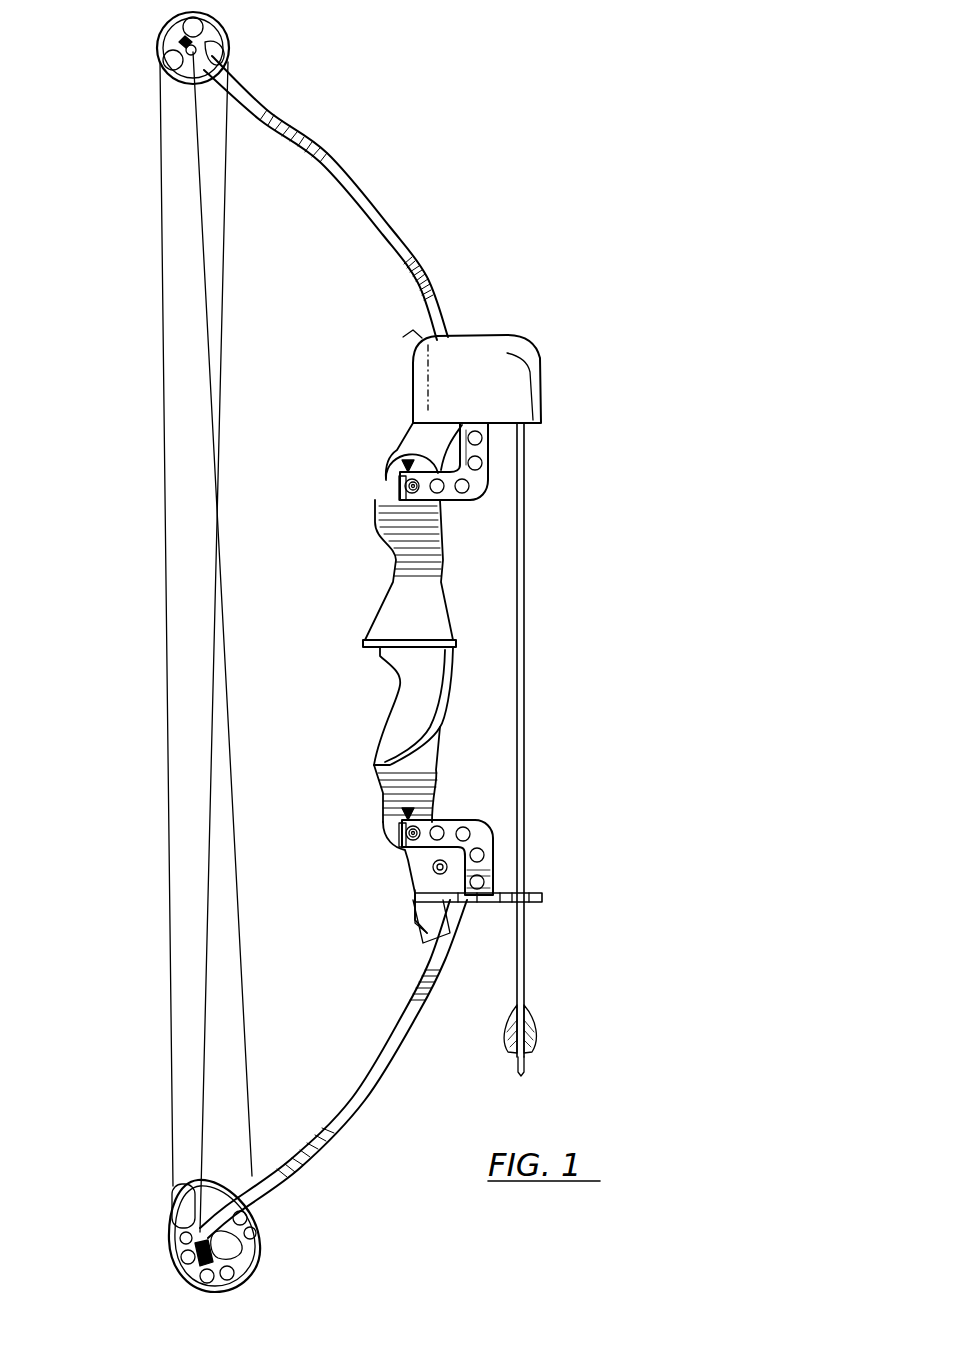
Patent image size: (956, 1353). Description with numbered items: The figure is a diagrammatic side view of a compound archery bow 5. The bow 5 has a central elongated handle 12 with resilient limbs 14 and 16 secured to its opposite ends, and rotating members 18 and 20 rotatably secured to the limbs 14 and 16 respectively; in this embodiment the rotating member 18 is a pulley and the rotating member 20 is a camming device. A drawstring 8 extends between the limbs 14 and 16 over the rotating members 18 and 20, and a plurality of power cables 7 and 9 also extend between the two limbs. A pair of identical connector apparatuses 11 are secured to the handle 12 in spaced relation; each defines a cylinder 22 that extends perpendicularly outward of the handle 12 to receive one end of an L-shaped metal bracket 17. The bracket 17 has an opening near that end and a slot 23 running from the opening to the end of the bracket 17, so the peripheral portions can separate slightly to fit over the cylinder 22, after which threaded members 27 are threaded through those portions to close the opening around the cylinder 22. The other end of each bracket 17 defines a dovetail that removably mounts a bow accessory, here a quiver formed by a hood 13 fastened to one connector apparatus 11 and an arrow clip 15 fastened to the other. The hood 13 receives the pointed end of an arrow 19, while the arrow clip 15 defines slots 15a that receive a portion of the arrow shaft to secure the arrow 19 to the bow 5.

The archery bow 5 is at (518, 172).
The cable 7 is at (222, 352).
The drawstring 8 is at (162, 632).
The cable 9 is at (208, 312).
The connector apparatus 11 is at (407, 468).
The handle 12 is at (346, 632).
The hood 13 is at (504, 374).
The limb 14 is at (398, 226).
The arrow clip 15 is at (538, 878).
The slot 15a is at (494, 905).
The limb 16 is at (393, 1063).
The bracket 17 is at (490, 492).
The rotating member 18 is at (278, 78).
The arrow 19 is at (522, 558).
The rotating member 20 is at (283, 1208).
The cylinder 22 is at (402, 483).
The slot 23 is at (400, 495).
The threaded member 27 is at (406, 503).